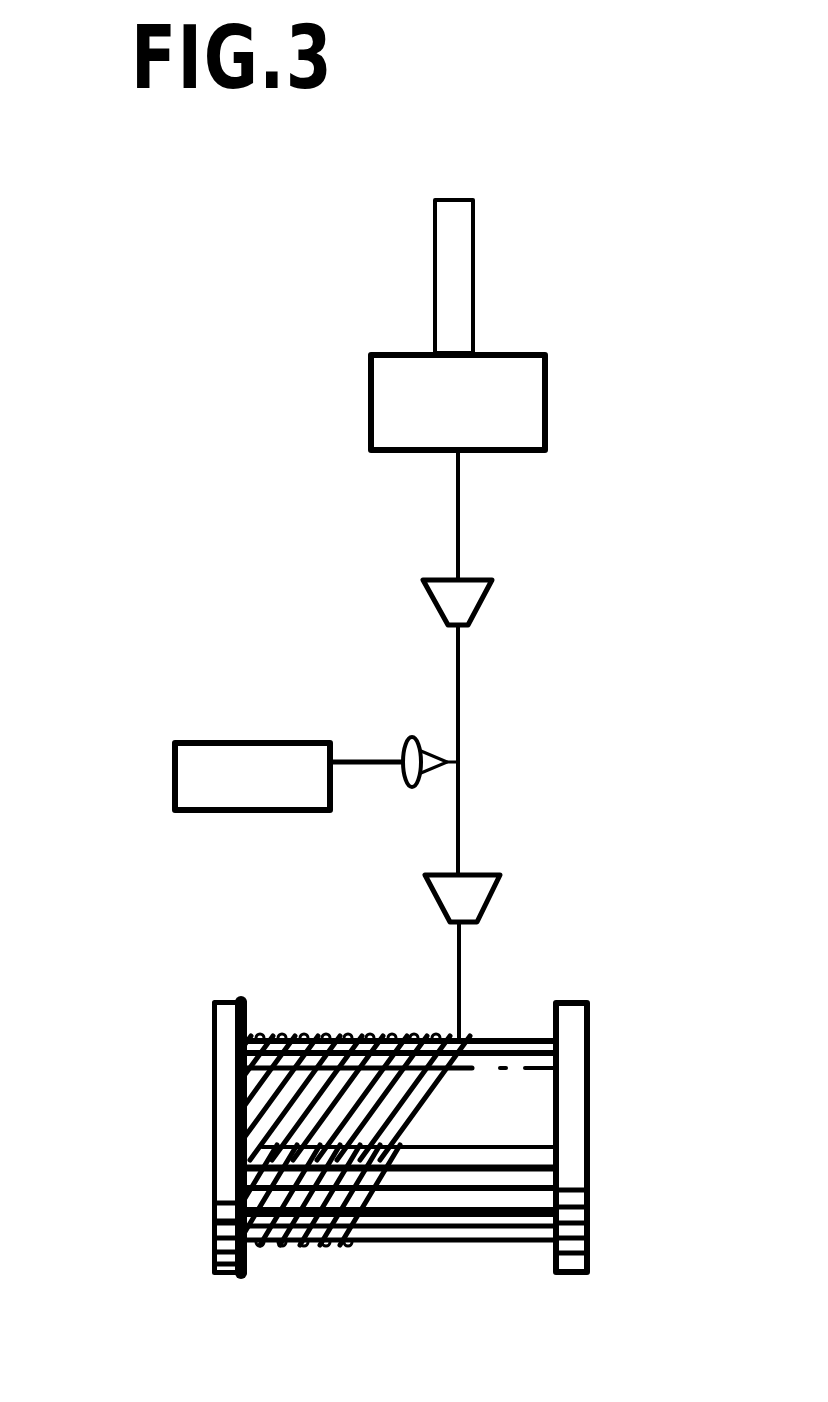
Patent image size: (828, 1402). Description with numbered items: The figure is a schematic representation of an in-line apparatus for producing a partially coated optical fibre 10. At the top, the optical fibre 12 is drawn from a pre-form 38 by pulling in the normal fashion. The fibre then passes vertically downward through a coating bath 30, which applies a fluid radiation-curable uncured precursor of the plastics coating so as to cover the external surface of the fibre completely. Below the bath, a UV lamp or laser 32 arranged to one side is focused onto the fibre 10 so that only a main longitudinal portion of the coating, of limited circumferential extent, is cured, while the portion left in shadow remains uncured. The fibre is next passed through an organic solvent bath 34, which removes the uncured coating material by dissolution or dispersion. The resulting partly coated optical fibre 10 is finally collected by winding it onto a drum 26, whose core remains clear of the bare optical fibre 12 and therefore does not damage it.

The partially coated optical fibre 10 is at (458, 970).
The optical fibre 12 is at (458, 512).
The drum 26 is at (573, 1122).
The coating bath 30 is at (483, 597).
The UV lamp or laser 32 is at (172, 773).
The organic solvent bath 34 is at (487, 897).
The pre-form 38 is at (460, 302).